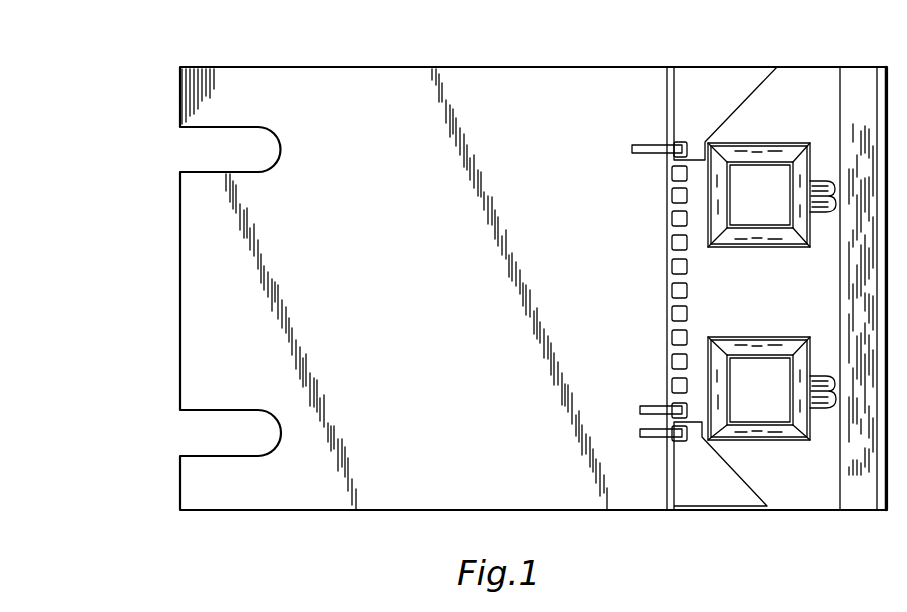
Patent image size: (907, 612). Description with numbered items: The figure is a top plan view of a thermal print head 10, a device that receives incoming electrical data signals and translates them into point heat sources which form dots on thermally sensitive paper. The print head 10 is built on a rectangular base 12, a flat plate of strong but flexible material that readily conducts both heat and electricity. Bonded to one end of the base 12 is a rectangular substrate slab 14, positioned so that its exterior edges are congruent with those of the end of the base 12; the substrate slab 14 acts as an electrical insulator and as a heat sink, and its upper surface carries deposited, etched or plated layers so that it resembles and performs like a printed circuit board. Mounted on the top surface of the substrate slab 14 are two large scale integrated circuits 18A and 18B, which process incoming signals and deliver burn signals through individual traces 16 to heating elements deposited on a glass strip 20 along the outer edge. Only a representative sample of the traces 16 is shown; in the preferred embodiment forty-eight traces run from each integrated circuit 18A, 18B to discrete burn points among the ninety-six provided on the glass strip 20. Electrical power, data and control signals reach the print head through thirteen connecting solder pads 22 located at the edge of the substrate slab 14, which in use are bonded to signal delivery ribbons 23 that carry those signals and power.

The thermal print head 10 is at (478, 66).
The base 12 is at (420, 281).
The substrate slab 14 is at (768, 303).
The traces 16 is at (830, 190).
The large scale integrated circuit 18A is at (766, 203).
The large scale integrated circuit 18B is at (766, 398).
The glass strip 20 is at (862, 75).
The solder pads 22 is at (672, 218).
The signal delivery ribbons 23 is at (632, 149).